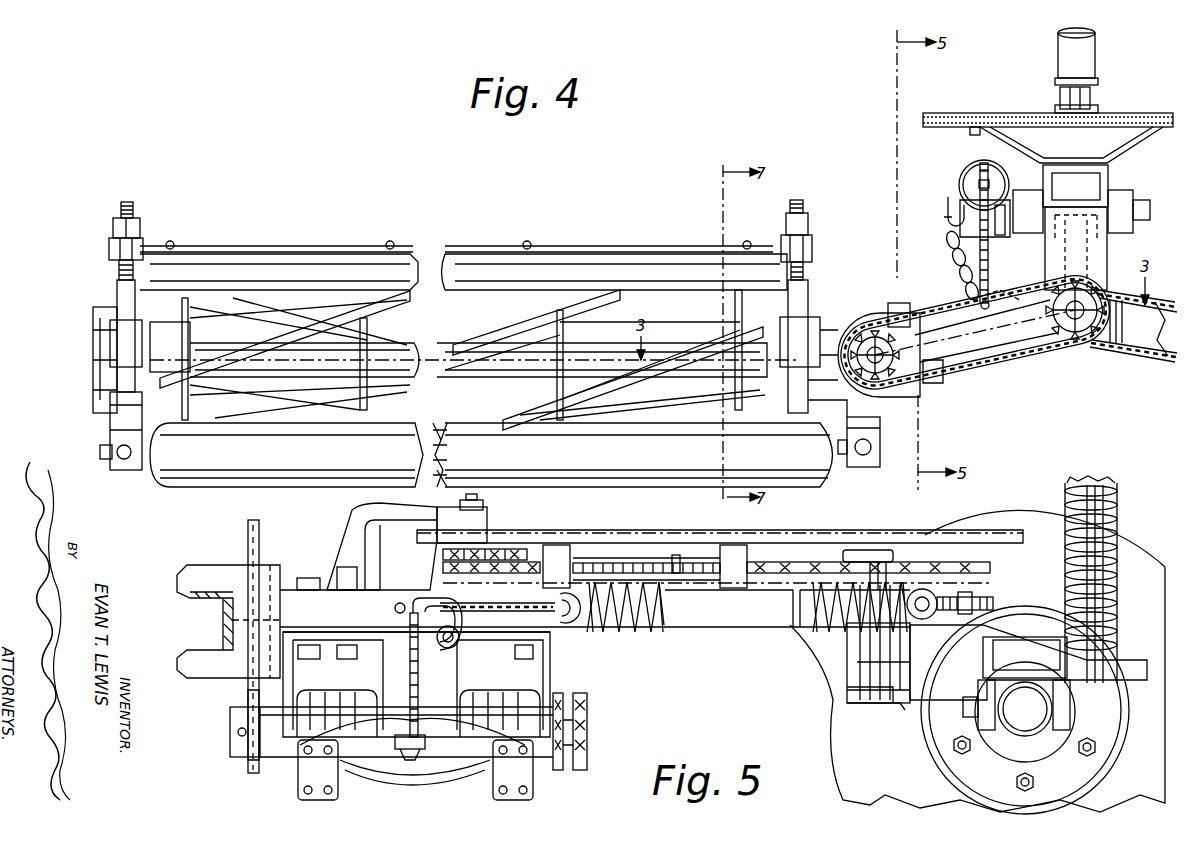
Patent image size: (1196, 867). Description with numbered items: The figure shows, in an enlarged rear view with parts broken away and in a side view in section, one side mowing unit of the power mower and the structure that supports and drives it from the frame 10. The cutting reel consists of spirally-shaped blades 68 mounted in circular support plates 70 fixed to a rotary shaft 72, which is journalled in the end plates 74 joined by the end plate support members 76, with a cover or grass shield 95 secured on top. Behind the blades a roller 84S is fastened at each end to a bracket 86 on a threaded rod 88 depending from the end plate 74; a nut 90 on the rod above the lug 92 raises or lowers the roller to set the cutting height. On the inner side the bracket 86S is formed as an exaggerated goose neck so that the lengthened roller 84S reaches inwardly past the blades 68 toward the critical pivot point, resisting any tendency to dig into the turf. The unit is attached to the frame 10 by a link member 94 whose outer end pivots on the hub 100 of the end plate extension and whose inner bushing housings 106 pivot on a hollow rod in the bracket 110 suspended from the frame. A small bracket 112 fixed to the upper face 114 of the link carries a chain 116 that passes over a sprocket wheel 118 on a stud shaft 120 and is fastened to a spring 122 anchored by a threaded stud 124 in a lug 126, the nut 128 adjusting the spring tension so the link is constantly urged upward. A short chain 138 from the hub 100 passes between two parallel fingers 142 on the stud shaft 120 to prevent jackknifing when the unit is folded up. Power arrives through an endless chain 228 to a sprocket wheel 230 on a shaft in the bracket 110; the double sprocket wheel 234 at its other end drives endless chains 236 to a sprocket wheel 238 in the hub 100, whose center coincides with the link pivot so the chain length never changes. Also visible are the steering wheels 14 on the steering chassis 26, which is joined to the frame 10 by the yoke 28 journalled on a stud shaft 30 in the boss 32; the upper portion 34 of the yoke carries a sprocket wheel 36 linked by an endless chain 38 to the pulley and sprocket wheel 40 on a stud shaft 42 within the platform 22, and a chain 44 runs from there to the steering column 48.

In FIG. 4, the frame 10 is at (1110, 190).
In FIG. 5, the steering wheels 14 is at (833, 770).
In FIG. 4, the platform 22 is at (1015, 113).
In FIG. 5, the platform 22 is at (645, 530).
In FIG. 5, the steering wheel chassis 26 is at (1028, 588).
In FIG. 5, the yoke 28 is at (903, 662).
In FIG. 5, the stud shaft 30 is at (845, 712).
In FIG. 5, the boss 32 is at (857, 650).
In FIG. 5, the upper portion of the yoke 34 is at (867, 550).
In FIG. 5, the sprocket wheel 36 is at (922, 562).
In FIG. 5, the endless chain 38 is at (677, 558).
In FIG. 5, the pulley and sprocket wheel 40 is at (522, 549).
In FIG. 5, the stud shaft 42 is at (484, 503).
In FIG. 5, the chain 44 is at (448, 515).
In FIG. 4, the steering column 48 is at (1058, 57).
In FIG. 5, the steering column 48 is at (350, 520).
In FIG. 4, the spirally-shaped blades 68 is at (478, 327).
In FIG. 4, the circular support plates 70 is at (355, 388).
In FIG. 4, the rotary shaft 72 is at (400, 350).
In FIG. 4, the end plates 74 is at (119, 275).
In FIG. 4, the end plate support members 76 is at (242, 262).
In FIG. 4, the roller 84S is at (491, 455).
In FIG. 4, the bracket 86 is at (110, 420).
In FIG. 4, the inner bracket 86S is at (880, 440).
In FIG. 4, the threaded rod 88 is at (117, 298).
In FIG. 4, the nut 90 is at (140, 228).
In FIG. 4, the lug 92 is at (109, 250).
In FIG. 4, the link member 94 is at (1012, 352).
In FIG. 5, the link member 94 is at (462, 767).
In FIG. 4, the cover or grass shield 95 is at (295, 246).
In FIG. 4, the hub 100 is at (868, 325).
In FIG. 5, the bushing housings 106 is at (357, 702).
In FIG. 5, the bracket 110 is at (548, 672).
In FIG. 4, the small bracket 112 is at (1000, 293).
In FIG. 5, the small bracket 112 is at (403, 762).
In FIG. 5, the upper face of the link 114 is at (490, 765).
In FIG. 4, the chain 116 is at (989, 258).
In FIG. 5, the chain 116 is at (420, 682).
In FIG. 4, the sprocket wheel 118 is at (995, 222).
In FIG. 5, the sprocket wheel 118 is at (540, 640).
In FIG. 4, the stud shaft 120 is at (1008, 178).
In FIG. 4, the spring 122 is at (962, 178).
In FIG. 5, the spring 122 is at (616, 635).
In FIG. 5, the threaded stud 124 is at (973, 603).
In FIG. 5, the lug 126 is at (938, 590).
In FIG. 5, the nut 128 is at (978, 597).
In FIG. 4, the chain 138 is at (950, 282).
In FIG. 4, the parallel fingers 142 is at (948, 215).
In FIG. 5, the endless chain 228 is at (248, 535).
In FIG. 5, the sprocket wheel 230 is at (248, 698).
In FIG. 4, the double sprocket wheel 234 is at (1082, 348).
In FIG. 5, the double sprocket wheel 234 is at (588, 714).
In FIG. 4, the endless chain 236 is at (940, 318).
In FIG. 4, the sprocket wheel 238 is at (885, 400).